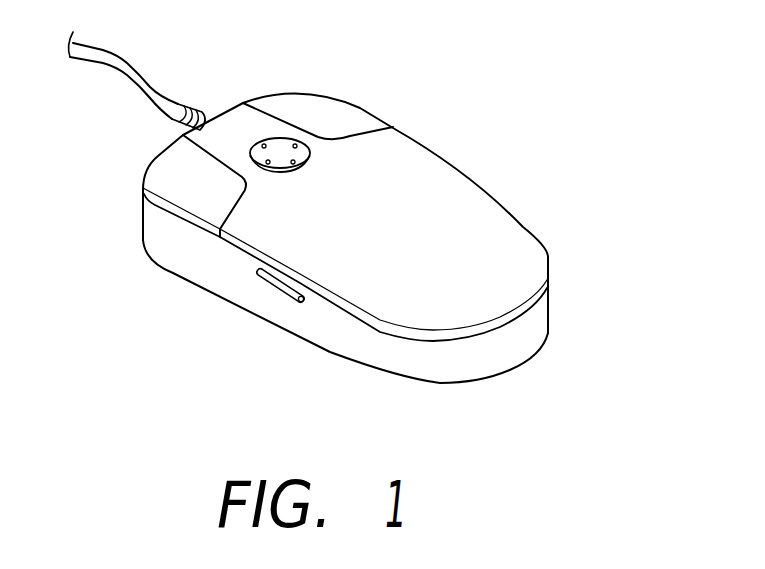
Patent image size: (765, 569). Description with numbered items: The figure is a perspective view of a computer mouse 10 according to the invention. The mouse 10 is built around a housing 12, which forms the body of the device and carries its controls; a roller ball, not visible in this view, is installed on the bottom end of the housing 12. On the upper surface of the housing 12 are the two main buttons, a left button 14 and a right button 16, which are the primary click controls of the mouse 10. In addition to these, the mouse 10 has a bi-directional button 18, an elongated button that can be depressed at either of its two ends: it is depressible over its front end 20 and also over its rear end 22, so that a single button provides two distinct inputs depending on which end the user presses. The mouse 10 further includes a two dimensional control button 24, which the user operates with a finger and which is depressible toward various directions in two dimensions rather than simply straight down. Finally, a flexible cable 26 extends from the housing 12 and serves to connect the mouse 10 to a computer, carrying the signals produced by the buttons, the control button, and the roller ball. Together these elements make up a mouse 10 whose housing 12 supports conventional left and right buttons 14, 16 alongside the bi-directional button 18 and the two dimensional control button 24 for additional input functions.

The computer mouse 10 is at (523, 165).
The housing 12 is at (518, 235).
The left button 14 is at (155, 176).
The right button 16 is at (310, 92).
The bi-directional button 18 is at (280, 292).
The front end 20 is at (258, 272).
The rear end 22 is at (303, 303).
The two dimensional control button 24 is at (265, 143).
The flexible cable 26 is at (117, 57).